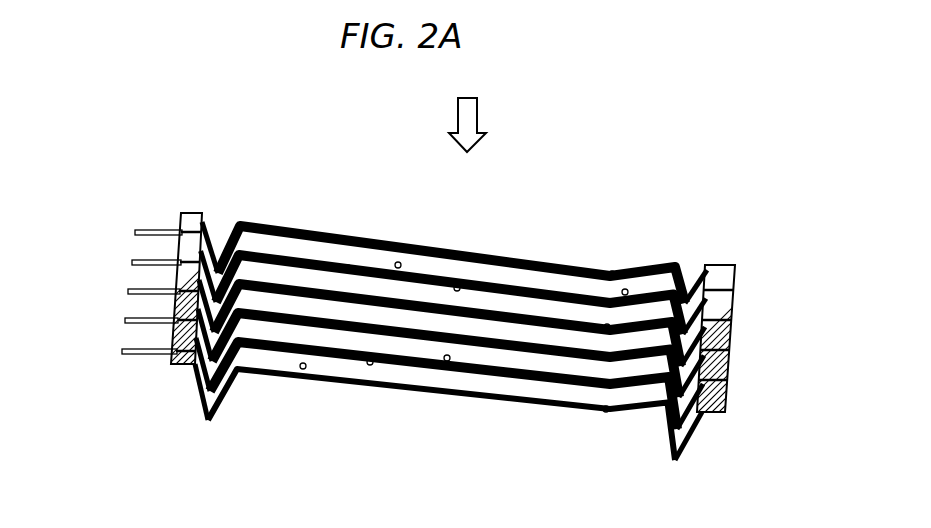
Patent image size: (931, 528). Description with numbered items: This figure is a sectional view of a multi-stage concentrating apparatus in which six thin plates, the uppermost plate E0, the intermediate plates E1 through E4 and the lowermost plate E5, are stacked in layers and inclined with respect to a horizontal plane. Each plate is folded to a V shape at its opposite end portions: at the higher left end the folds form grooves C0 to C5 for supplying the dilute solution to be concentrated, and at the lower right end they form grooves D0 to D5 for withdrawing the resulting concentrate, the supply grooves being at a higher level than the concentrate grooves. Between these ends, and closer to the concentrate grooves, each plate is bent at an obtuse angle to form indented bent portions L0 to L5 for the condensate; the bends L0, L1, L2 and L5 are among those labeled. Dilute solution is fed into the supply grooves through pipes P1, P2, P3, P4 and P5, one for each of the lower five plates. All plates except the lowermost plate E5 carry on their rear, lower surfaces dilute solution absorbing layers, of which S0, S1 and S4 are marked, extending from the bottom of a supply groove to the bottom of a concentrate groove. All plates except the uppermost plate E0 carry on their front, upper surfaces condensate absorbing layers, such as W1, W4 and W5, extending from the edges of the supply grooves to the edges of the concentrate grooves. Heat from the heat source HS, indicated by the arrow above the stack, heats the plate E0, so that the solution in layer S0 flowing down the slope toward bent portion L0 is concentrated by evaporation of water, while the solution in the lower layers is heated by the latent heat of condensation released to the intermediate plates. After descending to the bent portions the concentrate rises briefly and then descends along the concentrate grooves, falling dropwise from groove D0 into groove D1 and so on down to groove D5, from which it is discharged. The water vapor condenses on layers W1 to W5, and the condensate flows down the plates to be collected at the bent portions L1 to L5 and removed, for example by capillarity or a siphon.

The pipe P1 is at (152, 229).
The pipe P2 is at (146, 261).
The pipe P3 is at (140, 290).
The pipe P4 is at (135, 318).
The pipe P5 is at (130, 350).
The groove for supplying the dilute solution C0 is at (222, 240).
The groove for supplying the dilute solution C5 is at (204, 398).
The thin plate E0 is at (300, 226).
The thin plate E1 is at (736, 292).
The thin plate E4 is at (729, 380).
The thin plate E5 is at (723, 411).
The dilute solution absorbing layer S0 is at (348, 268).
The dilute solution absorbing layer S1 is at (457, 287).
The dilute solution absorbing layer S4 is at (370, 362).
The condensate absorbing layer W1 is at (398, 265).
The condensate absorbing layer W4 is at (447, 358).
The condensate absorbing layer W5 is at (303, 366).
The bent portion L0 is at (612, 274).
The bent portion L1 is at (625, 292).
The bent portion L2 is at (607, 327).
The bent portion L5 is at (606, 410).
The groove for withdrawing the concentrate D0 is at (688, 284).
The groove for withdrawing the concentrate D1 is at (690, 313).
The groove for withdrawing the concentrate D5 is at (690, 430).
The heat source HS is at (467, 110).